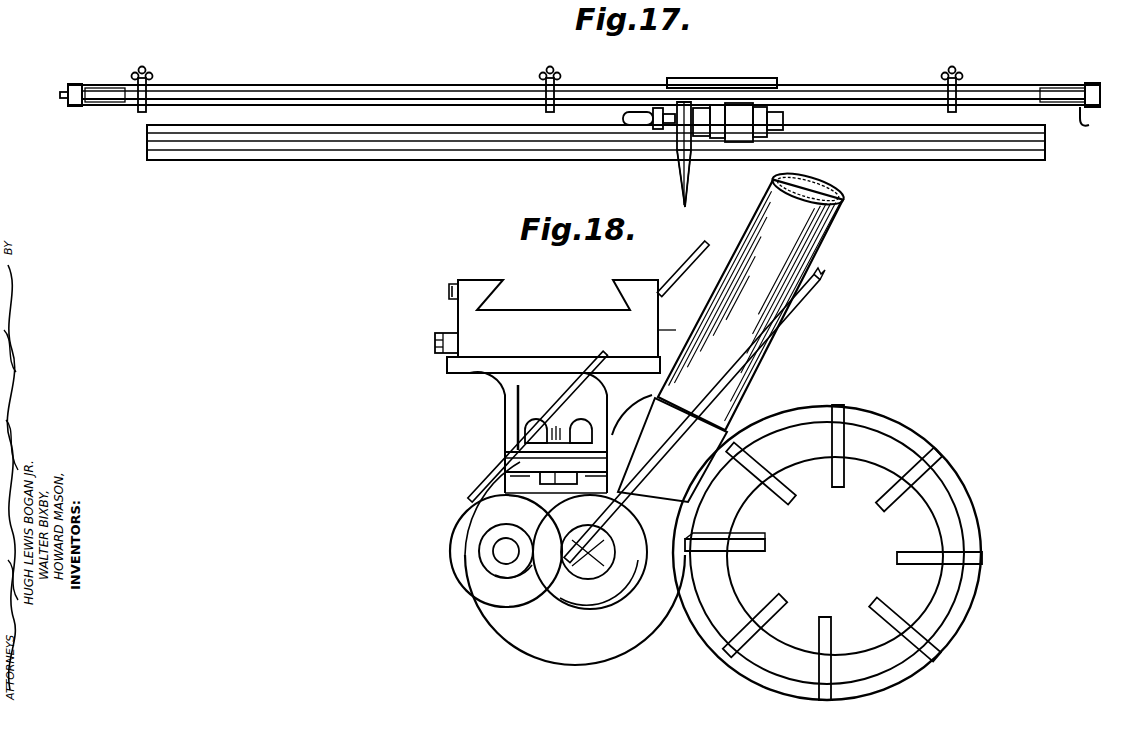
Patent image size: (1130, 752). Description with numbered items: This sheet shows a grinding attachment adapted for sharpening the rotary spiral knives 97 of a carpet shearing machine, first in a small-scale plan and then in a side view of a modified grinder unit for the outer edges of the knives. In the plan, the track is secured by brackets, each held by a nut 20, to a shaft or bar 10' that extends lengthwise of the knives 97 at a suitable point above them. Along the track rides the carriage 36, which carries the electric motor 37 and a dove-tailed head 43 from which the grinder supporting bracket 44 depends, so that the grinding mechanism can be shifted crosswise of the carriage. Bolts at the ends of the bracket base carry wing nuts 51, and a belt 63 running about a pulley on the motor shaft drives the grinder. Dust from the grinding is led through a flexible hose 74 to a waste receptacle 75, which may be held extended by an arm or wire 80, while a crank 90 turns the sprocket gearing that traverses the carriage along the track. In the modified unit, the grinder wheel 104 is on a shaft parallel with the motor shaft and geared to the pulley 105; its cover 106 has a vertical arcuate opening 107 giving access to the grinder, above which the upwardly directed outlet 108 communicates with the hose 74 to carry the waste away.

In FIG. 17, the shaft or bar 10' is at (580, 82).
In FIG. 17, the nut 20 is at (150, 80).
In FIG. 17, the carriage 36 is at (773, 78).
In FIG. 18, the carriage 36 is at (460, 315).
In FIG. 17, the electric motor 37 is at (783, 122).
In FIG. 18, the head 43 is at (447, 365).
In FIG. 18, the grinder supporting bracket 44 is at (503, 397).
In FIG. 18, the wing nut 51 is at (537, 421).
In FIG. 18, the belt 63 is at (700, 250).
In FIG. 17, the flexible hose 74 is at (622, 118).
In FIG. 18, the flexible hose 74 is at (826, 243).
In FIG. 17, the waste receptacle 75 is at (690, 182).
In FIG. 17, the arm or wire 80 is at (679, 183).
In FIG. 17, the crank 90 is at (1083, 126).
In FIG. 17, the knives 97 is at (290, 160).
In FIG. 18, the knives 97 is at (770, 481).
In FIG. 18, the grinder wheel 104 is at (687, 538).
In FIG. 18, the pulley 105 is at (463, 578).
In FIG. 18, the cover 106 is at (641, 643).
In FIG. 18, the vertical arcuate opening 107 is at (688, 497).
In FIG. 18, the outlet 108 is at (650, 420).